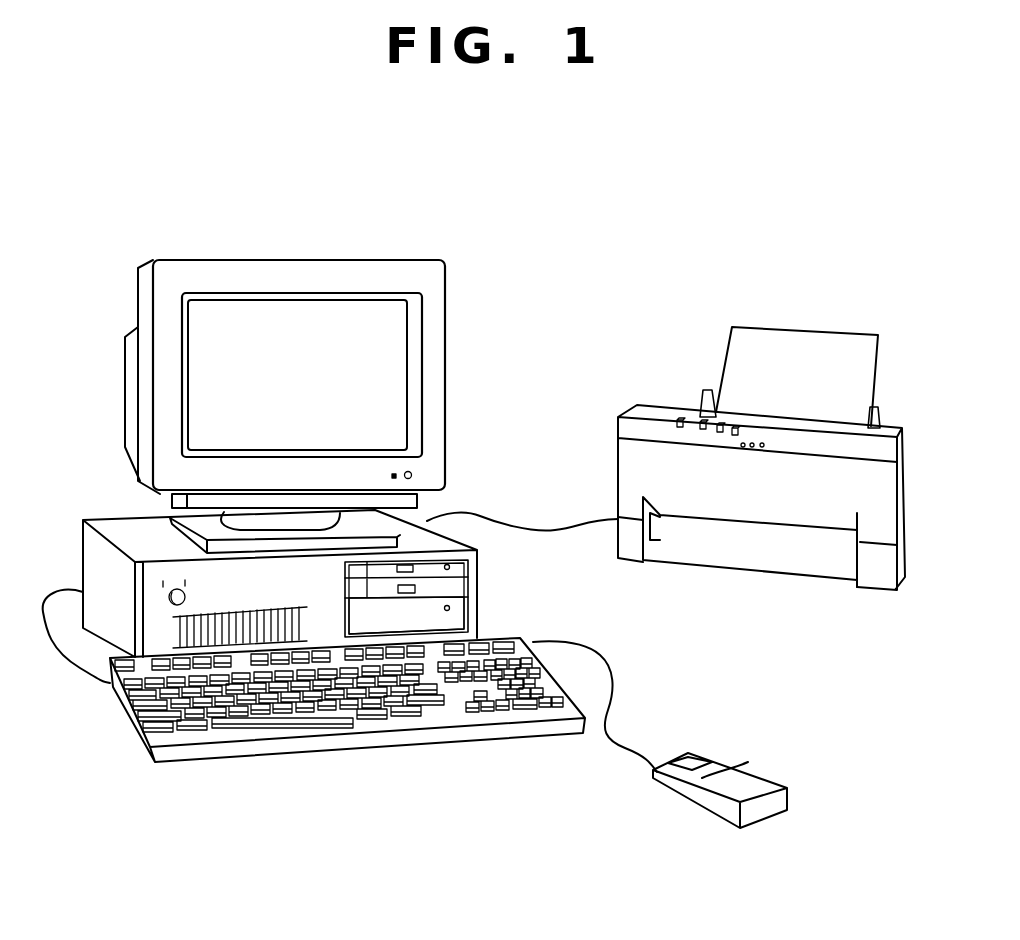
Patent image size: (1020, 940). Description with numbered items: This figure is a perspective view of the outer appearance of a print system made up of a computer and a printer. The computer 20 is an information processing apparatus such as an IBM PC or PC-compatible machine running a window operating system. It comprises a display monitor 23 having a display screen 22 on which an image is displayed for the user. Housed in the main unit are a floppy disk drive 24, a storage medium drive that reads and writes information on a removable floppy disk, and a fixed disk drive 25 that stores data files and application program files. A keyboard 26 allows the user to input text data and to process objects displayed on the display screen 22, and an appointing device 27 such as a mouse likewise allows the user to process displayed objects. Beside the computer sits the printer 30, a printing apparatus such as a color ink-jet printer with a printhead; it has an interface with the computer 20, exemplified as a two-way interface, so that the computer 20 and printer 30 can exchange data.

The computer 20 is at (447, 254).
The display screen 22 is at (378, 399).
The display monitor 23 is at (302, 260).
The floppy disk drive 24 is at (450, 590).
The fixed disk drive 25 is at (437, 618).
The keyboard 26 is at (228, 735).
The appointing device 27 is at (762, 823).
The printer 30 is at (718, 315).